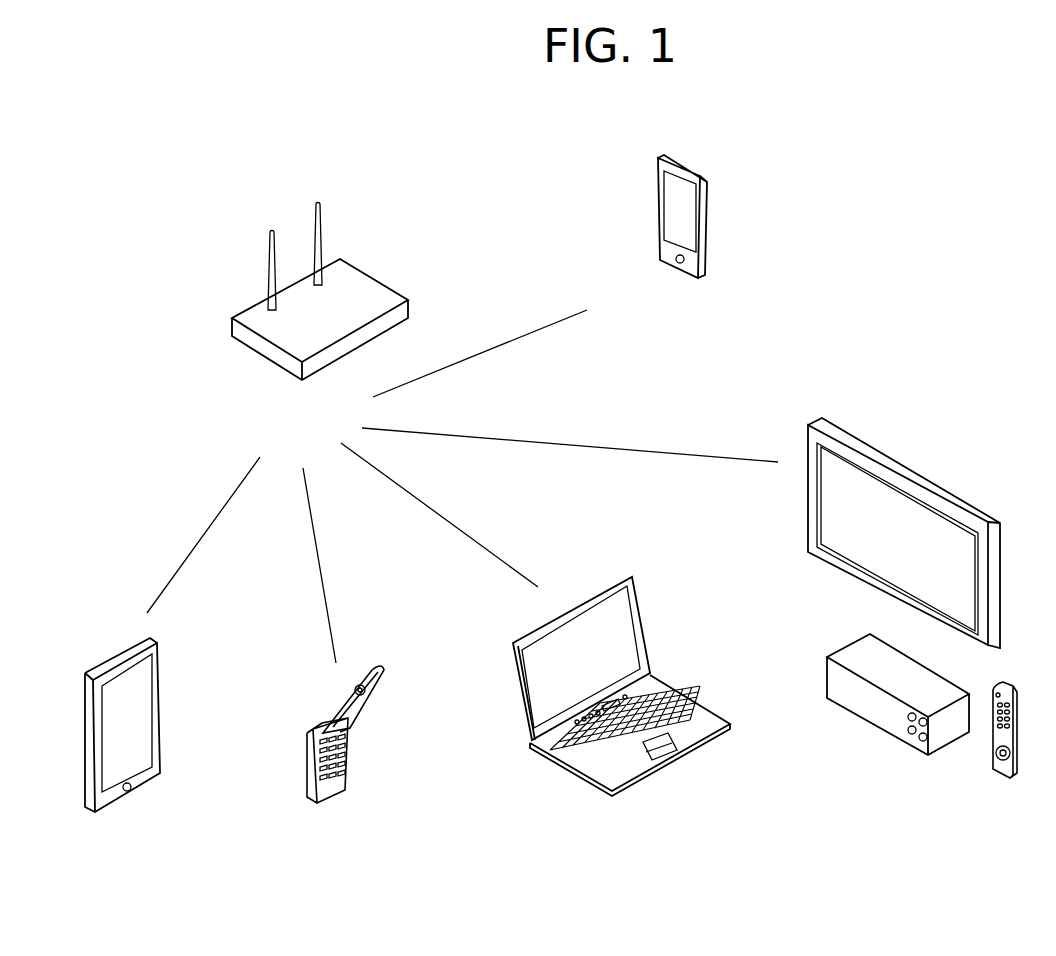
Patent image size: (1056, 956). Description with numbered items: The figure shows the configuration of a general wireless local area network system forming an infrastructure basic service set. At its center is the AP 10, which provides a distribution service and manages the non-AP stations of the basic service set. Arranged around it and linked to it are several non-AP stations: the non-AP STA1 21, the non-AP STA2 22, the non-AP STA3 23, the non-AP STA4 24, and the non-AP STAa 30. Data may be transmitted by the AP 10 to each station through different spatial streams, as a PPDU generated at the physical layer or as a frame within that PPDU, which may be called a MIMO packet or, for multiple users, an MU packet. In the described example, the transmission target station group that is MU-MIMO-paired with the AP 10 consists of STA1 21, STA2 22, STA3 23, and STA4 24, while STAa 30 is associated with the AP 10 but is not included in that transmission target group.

The AP 10 is at (320, 329).
The non-AP STA1 21 is at (117, 762).
The non-AP STA2 22 is at (339, 776).
The non-AP STA3 23 is at (621, 721).
The non-AP STA4 24 is at (912, 623).
The non-AP STAa 30 is at (678, 253).